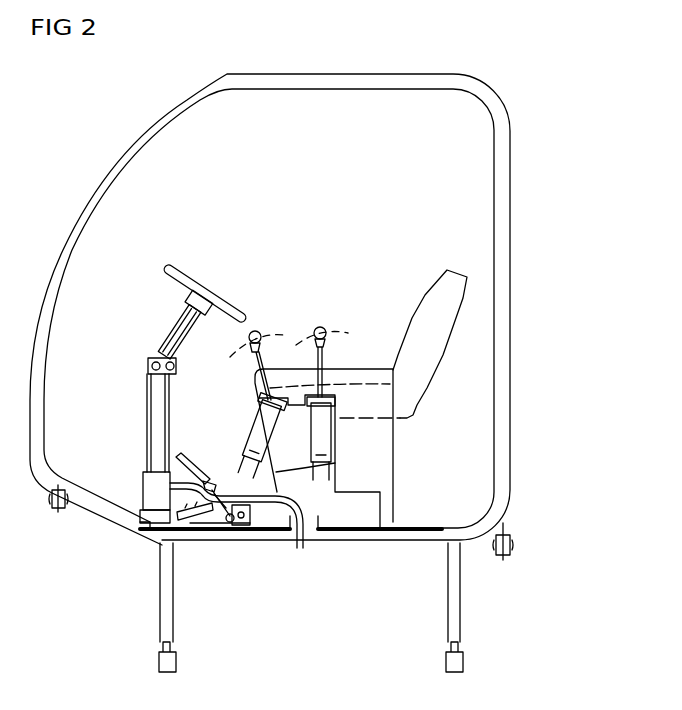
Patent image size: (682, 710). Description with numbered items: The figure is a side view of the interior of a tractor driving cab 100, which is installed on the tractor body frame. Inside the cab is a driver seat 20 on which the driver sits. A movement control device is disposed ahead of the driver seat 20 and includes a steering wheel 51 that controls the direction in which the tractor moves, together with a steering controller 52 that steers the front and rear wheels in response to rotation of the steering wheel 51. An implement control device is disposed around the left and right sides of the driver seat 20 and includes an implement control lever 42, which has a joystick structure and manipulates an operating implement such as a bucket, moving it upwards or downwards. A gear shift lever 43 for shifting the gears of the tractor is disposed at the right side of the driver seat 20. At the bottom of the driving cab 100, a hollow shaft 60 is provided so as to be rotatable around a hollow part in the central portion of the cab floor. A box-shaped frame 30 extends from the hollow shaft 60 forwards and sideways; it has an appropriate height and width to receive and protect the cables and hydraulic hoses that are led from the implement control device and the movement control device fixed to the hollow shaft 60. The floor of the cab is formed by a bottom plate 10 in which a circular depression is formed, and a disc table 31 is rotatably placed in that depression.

The driving cab 100 is at (505, 207).
The bottom plate 10 is at (447, 522).
The driver seat 20 is at (446, 277).
The box-shaped frame 30 is at (258, 481).
The disc table 31 is at (396, 533).
The implement control lever 42 is at (262, 330).
The gear shift lever 43 is at (325, 330).
The steering wheel 51 is at (196, 268).
The steering controller 52 is at (150, 487).
The hollow shaft 60 is at (323, 518).